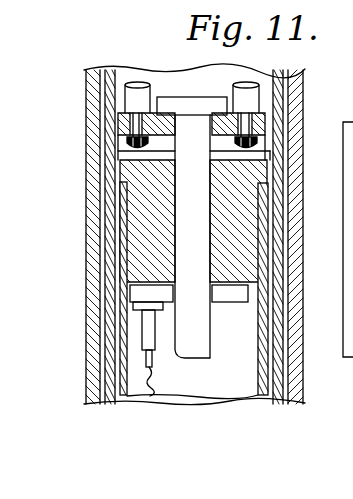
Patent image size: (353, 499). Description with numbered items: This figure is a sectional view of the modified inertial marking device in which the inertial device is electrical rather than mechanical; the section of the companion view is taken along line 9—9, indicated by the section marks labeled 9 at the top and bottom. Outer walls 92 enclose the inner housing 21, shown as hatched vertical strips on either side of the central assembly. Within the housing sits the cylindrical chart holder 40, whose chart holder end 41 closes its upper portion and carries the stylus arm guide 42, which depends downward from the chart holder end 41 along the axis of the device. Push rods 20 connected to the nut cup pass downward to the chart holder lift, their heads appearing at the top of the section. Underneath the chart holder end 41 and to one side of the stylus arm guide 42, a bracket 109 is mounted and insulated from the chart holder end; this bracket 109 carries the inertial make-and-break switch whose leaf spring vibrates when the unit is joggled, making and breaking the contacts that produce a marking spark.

The clutch spring 9 is at (165, 93).
The push rods 20 is at (240, 89).
The inner housing 21 is at (110, 128).
The chart holder 40 is at (127, 172).
The chart holder end 41 is at (130, 212).
The stylus arm guide 42 is at (182, 152).
The outer wall 92 is at (95, 108).
The bracket 109 is at (148, 323).